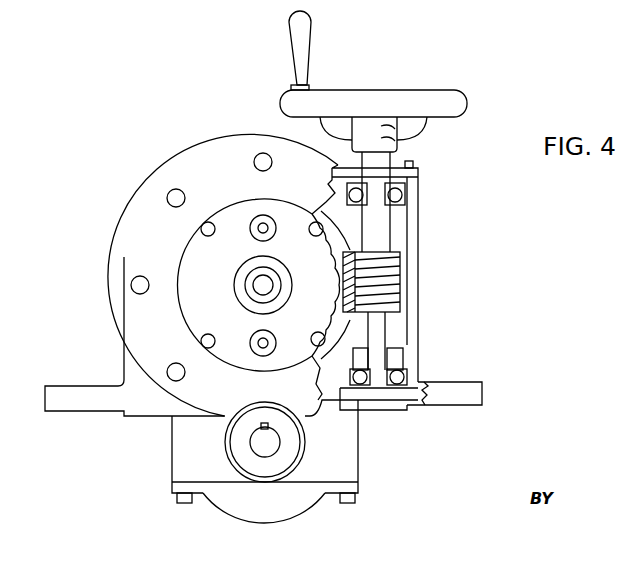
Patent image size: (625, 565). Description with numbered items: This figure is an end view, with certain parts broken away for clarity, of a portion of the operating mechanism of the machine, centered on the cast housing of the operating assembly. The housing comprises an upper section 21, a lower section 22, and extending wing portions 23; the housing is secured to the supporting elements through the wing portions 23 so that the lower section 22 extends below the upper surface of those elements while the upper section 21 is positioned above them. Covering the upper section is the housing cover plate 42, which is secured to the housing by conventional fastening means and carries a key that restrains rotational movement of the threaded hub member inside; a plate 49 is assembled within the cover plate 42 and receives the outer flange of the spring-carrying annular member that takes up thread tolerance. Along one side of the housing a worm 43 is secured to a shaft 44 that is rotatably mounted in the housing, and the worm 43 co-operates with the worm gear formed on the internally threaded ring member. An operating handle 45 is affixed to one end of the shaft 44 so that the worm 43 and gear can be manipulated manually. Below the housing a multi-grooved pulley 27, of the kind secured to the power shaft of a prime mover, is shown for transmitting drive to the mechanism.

The upper section 21 is at (123, 257).
The lower section 22 is at (168, 442).
The wing portions 23 is at (53, 397).
The multi-grooved pulley 27 is at (262, 450).
The housing cover plate 42 is at (185, 175).
The worm 43 is at (400, 260).
The shaft 44 is at (392, 230).
The operating handle 45 is at (453, 90).
The plate 49 is at (195, 308).